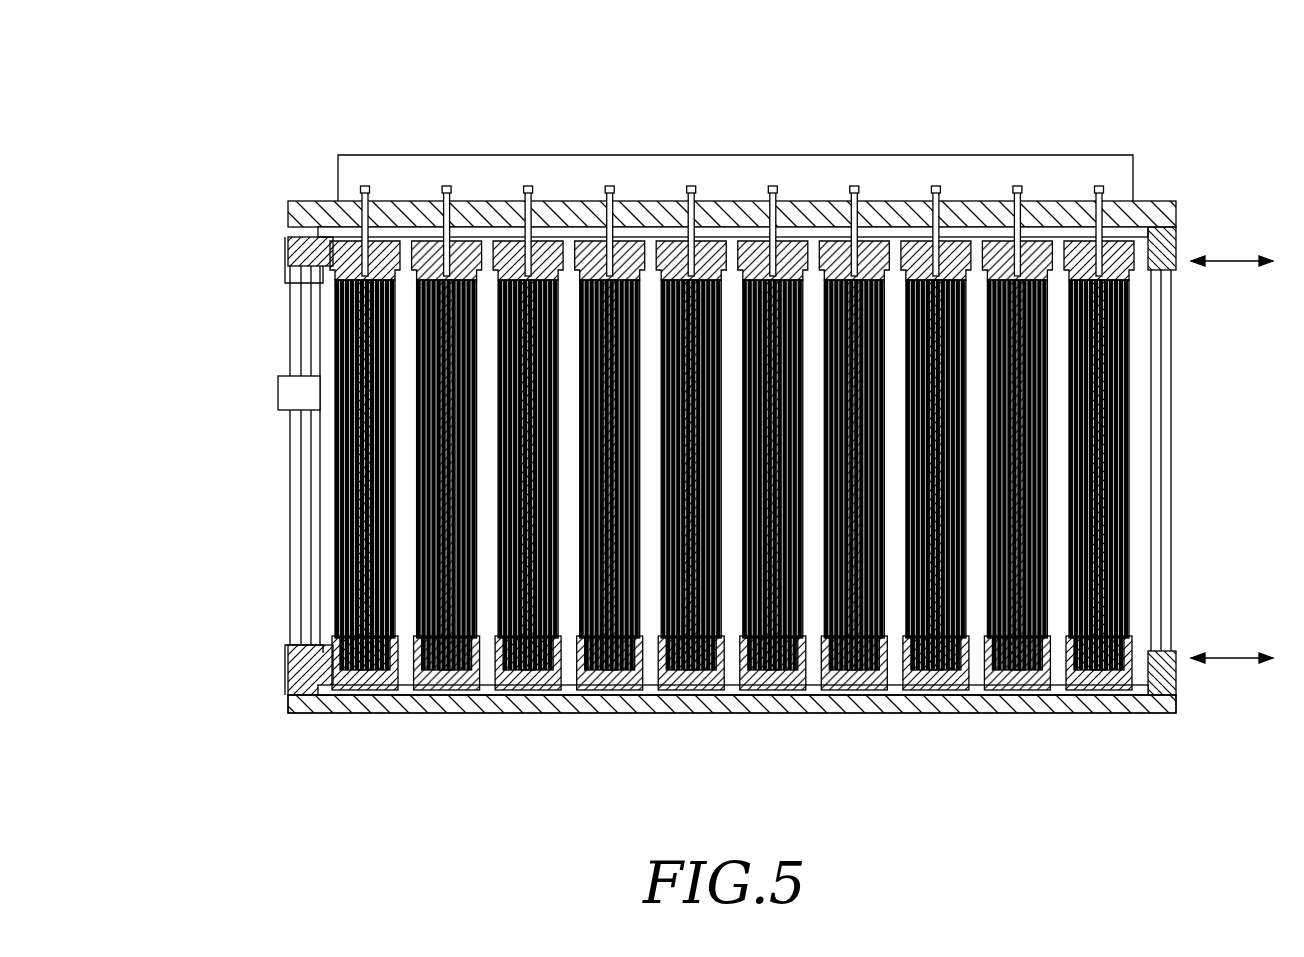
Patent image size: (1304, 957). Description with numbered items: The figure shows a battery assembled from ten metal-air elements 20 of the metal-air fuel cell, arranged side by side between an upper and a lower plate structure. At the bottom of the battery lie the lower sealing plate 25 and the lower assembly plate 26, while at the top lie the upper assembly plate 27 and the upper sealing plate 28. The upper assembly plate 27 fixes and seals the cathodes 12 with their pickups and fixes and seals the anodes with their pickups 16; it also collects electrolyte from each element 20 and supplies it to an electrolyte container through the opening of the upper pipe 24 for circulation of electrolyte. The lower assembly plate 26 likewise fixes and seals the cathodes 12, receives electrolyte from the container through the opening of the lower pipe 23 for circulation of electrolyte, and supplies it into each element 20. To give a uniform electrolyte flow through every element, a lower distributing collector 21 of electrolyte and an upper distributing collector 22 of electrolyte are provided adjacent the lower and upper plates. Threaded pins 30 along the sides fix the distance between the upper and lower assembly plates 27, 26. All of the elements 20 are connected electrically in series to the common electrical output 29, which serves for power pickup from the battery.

The cathode 12 is at (889, 232).
The anode pickup 16 is at (1006, 180).
The element 20 is at (608, 683).
The lower distributing collector of electrolyte 21 is at (785, 688).
The upper distributing collector of electrolyte 22 is at (792, 225).
The lower pipe for circulation of electrolyte 23 is at (1165, 660).
The upper pipe for circulation of electrolyte 24 is at (1170, 235).
The lower sealing plate 25 is at (482, 700).
The lower assembly plate 26 is at (300, 655).
The upper assembly plate 27 is at (282, 244).
The upper sealing plate 28 is at (404, 207).
The electrical output 29 is at (290, 380).
The threaded pin 30 is at (292, 478).